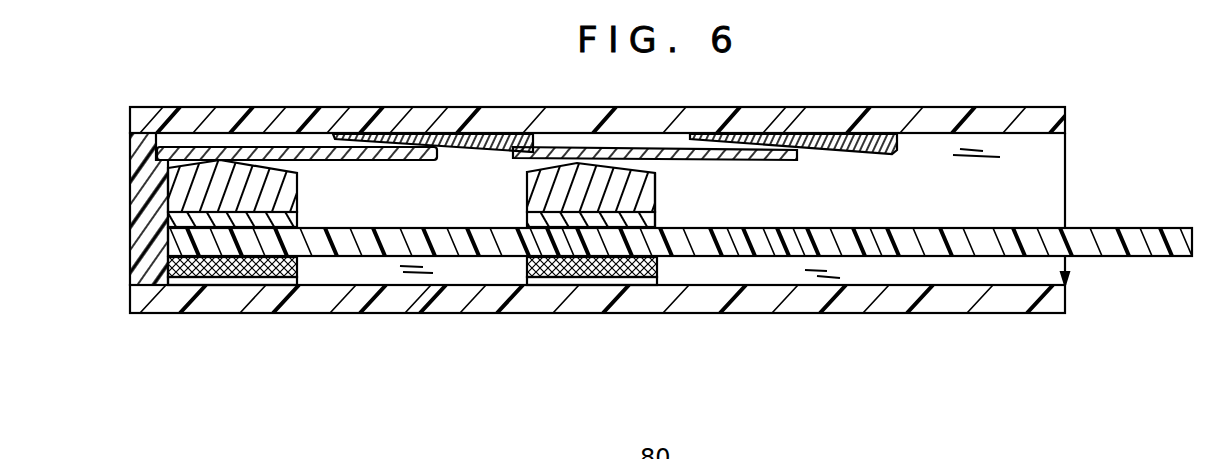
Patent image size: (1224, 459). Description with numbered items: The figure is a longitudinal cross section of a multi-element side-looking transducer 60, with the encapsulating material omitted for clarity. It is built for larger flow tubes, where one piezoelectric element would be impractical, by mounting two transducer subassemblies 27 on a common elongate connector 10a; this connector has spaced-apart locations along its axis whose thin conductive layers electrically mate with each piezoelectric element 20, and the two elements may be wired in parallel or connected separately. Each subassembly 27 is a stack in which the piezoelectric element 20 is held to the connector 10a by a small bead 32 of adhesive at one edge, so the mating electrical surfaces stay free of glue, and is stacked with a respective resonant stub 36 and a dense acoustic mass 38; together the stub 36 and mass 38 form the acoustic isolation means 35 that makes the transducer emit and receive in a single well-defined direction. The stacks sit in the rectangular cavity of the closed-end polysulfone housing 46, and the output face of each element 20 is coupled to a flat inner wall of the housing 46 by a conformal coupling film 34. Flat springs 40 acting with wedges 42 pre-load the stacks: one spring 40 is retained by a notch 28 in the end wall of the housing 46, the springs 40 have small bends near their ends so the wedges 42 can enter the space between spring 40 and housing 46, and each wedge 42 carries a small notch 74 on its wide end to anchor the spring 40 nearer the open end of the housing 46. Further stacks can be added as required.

The connector 10a is at (1137, 227).
The piezoelectric element 20 is at (140, 287).
The transducer subassembly 27 is at (508, 273).
The notch 28 is at (168, 163).
The bead of adhesive 32 is at (312, 262).
The conformal coupling film 34 is at (228, 268).
The acoustic isolation means 35 is at (668, 199).
The resonant stub 36 is at (523, 222).
The acoustic mass 38 is at (523, 190).
The spring 40 is at (190, 145).
The wedge 42 is at (443, 133).
The housing 46 is at (847, 315).
The multi-element transducer 60 is at (1003, 337).
The notch 74 is at (884, 157).